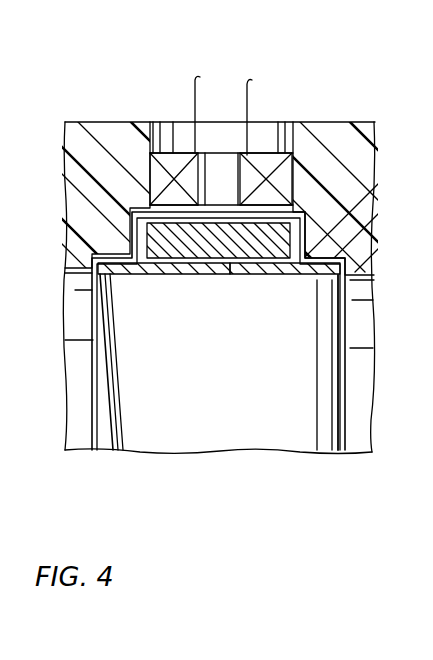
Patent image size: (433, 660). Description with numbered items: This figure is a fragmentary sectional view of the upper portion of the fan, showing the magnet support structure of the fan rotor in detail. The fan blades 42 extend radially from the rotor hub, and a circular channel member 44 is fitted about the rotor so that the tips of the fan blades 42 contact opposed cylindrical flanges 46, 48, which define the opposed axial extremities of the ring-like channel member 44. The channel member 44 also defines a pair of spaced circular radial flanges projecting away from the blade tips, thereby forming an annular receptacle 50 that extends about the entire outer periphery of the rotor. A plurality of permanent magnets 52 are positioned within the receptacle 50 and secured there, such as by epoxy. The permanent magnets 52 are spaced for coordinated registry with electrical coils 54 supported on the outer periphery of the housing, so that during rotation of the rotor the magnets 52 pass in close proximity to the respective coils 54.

The fan blades 42 is at (251, 424).
The circular channel member 44 is at (275, 248).
The cylindrical flange 46 is at (113, 273).
The cylindrical flange 48 is at (320, 279).
The annular receptacle 50 is at (296, 212).
The permanent magnets 52 is at (167, 237).
The electrical coils 54 is at (165, 157).